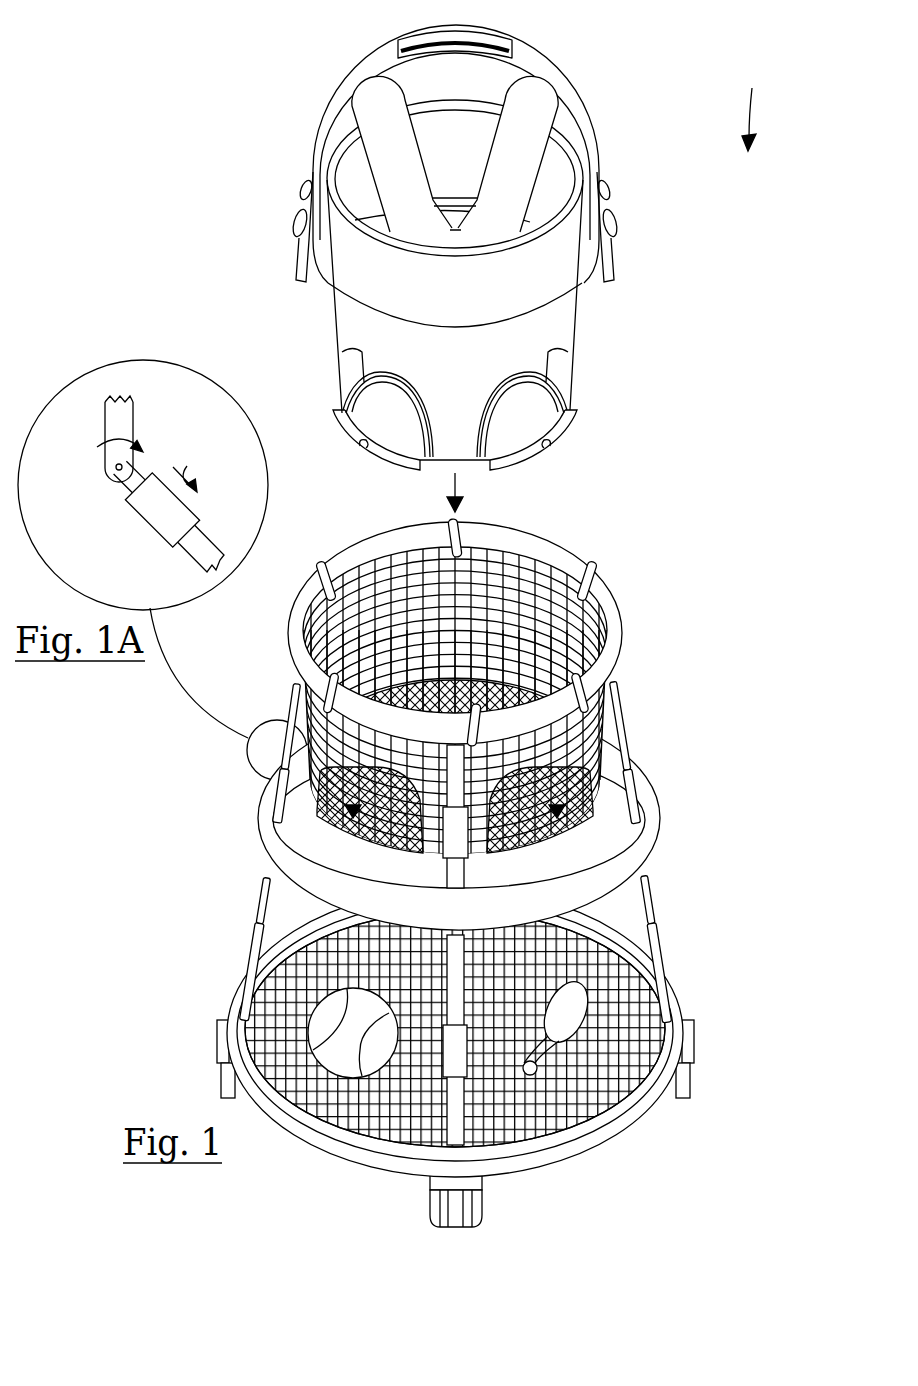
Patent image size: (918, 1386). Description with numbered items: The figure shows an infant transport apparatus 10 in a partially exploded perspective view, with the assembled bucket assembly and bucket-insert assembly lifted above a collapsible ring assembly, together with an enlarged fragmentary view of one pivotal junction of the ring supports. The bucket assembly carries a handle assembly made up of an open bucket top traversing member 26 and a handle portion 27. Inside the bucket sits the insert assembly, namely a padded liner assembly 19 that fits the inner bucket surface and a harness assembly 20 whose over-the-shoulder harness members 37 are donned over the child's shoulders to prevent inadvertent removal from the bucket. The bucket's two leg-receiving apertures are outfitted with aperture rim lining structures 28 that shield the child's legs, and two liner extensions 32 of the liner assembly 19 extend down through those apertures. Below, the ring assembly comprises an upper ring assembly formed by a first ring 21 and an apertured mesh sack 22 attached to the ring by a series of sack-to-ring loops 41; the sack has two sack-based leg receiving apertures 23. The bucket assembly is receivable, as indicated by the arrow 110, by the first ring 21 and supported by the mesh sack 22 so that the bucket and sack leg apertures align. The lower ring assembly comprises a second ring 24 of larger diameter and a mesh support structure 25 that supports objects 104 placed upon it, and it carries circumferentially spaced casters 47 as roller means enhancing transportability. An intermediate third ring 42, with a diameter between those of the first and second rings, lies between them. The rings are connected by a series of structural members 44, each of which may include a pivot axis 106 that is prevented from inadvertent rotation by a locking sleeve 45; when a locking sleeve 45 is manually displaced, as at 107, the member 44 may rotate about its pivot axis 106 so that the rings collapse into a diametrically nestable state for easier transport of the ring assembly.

In FIG. 1, the infant transport apparatus 10 is at (753, 106).
In FIG. 1, the liner assembly 19 is at (588, 185).
In FIG. 1, the harness assembly 20 is at (545, 128).
In FIG. 1, the first ring 21 is at (297, 658).
In FIG. 1, the apertured mesh sack 22 is at (623, 737).
In FIG. 1, the sack-based leg receiving apertures 23 is at (345, 820).
In FIG. 1, the second ring 24 is at (622, 1133).
In FIG. 1, the mesh support structure 25 is at (628, 1022).
In FIG. 1, the open bucket top traversing member 26 is at (563, 72).
In FIG. 1, the handle portion 27 is at (490, 34).
In FIG. 1, the aperture rim lining structures 28 is at (352, 349).
In FIG. 1, the liner extensions 32 is at (367, 442).
In FIG. 1, the over-the-shoulder harness members 37 is at (402, 98).
In FIG. 1, the sack-to-ring loops 41 is at (295, 707).
In FIG. 1, the third ring 42 is at (652, 856).
In FIG. 1A, the structural members 44 is at (133, 423).
In FIG. 1, the structural members 44 is at (273, 792).
In FIG. 1A, the locking sleeves 45 is at (147, 524).
In FIG. 1, the locking sleeves 45 is at (285, 757).
In FIG. 1, the casters 47 is at (228, 1080).
In FIG. 1, the objects 104 is at (342, 1063).
In FIG. 1A, the pivot axis 106 is at (112, 437).
In FIG. 1A, the manual displacement of locking sleeve 107 is at (187, 466).
In FIG. 1, the bucket receiving direction arrow 110 is at (458, 485).